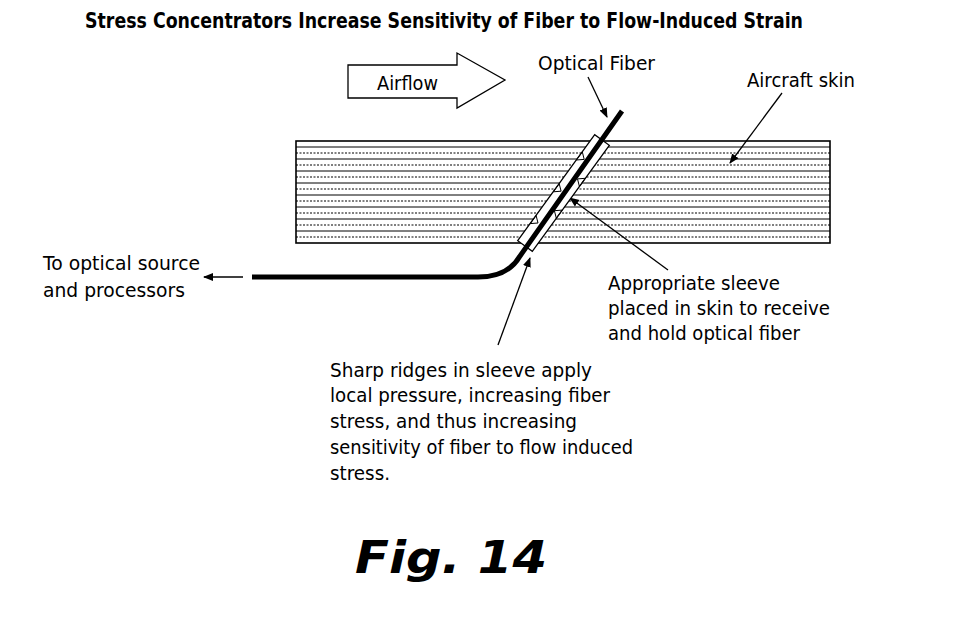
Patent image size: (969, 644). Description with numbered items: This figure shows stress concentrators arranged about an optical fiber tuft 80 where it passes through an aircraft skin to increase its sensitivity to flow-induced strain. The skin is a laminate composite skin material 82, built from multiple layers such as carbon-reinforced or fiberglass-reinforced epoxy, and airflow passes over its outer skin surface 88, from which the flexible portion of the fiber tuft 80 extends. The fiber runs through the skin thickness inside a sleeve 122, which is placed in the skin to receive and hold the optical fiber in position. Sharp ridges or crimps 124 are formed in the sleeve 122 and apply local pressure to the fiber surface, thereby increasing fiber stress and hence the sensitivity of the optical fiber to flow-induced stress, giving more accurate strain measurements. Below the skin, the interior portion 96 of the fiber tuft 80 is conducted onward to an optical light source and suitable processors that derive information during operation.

The optical fiber tuft 80 is at (615, 123).
The laminate composite skin material 82 is at (337, 243).
The skin surface 88 is at (790, 141).
The interior portion of the optical fiber tuft 96 is at (398, 280).
The sleeve 122 is at (556, 216).
The sharp ridges or crimps 124 is at (545, 141).